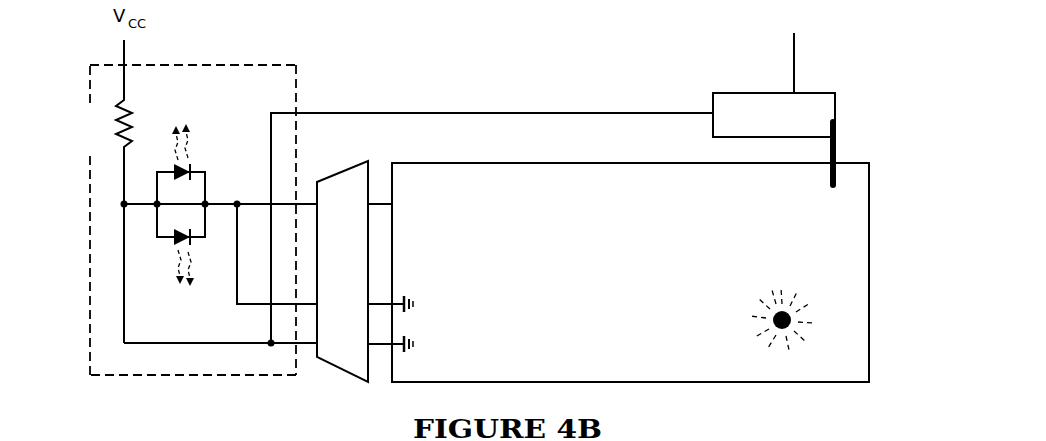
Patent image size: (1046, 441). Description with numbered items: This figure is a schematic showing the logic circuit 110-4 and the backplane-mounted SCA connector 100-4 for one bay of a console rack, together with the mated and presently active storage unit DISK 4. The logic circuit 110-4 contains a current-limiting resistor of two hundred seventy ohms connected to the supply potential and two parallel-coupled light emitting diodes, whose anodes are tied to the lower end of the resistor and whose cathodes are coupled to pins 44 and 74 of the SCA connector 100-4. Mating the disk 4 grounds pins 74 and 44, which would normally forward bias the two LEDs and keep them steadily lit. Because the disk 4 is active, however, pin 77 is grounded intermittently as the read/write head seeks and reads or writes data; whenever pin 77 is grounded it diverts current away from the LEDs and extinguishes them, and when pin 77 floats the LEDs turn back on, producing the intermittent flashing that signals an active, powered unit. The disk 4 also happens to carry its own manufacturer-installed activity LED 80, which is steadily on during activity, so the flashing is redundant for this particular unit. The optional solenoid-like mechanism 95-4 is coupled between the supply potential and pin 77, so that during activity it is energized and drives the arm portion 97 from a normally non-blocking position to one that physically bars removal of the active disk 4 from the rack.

The logic circuit 110-4 is at (92, 330).
The SCA connector 100-4 is at (330, 365).
The pin 44 is at (357, 205).
The pin 74 is at (367, 305).
The pin 77 is at (367, 345).
The disk 4 is at (630, 272).
The solenoid-like mechanism 95-4 is at (766, 92).
The arm portion 97 is at (838, 153).
The activity LED 80 is at (785, 290).